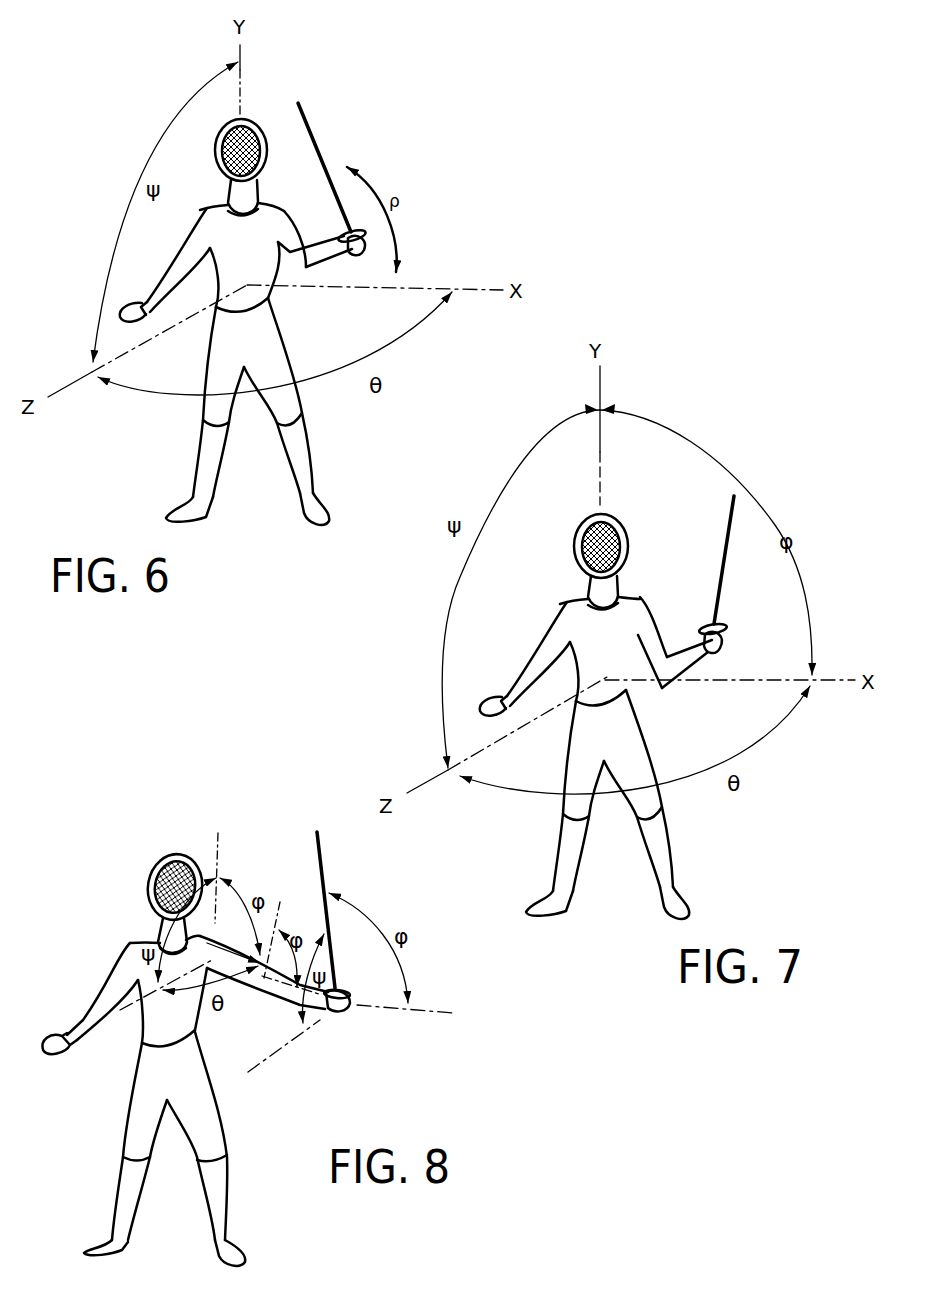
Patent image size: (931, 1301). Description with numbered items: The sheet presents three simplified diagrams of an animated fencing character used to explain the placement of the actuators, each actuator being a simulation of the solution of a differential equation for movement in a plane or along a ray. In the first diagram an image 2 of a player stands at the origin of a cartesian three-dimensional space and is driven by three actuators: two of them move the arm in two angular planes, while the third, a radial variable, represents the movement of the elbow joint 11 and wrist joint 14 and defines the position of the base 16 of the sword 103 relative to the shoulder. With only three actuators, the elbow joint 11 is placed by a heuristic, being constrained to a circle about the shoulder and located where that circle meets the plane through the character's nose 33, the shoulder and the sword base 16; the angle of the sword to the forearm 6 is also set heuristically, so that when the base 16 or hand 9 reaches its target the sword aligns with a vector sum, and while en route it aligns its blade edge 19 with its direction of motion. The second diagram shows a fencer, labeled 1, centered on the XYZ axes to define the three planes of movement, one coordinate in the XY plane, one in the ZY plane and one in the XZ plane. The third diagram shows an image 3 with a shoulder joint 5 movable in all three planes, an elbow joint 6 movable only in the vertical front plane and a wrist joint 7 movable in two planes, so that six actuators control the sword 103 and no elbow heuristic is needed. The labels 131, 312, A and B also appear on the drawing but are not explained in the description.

In FIG. 7, the fencer body 1 is at (641, 727).
In FIG. 6, the image of a player 2 is at (305, 413).
In FIG. 8, the image 3 is at (136, 1065).
In FIG. 8, the shoulder joint 5 is at (208, 944).
In FIG. 8, the elbow joint 6 is at (256, 984).
In FIG. 8, the wrist joint 7 is at (322, 1012).
In FIG. 6, the hand 9 is at (352, 250).
In FIG. 8, the hand 9 is at (346, 1000).
In FIG. 6, the elbow joint 11 is at (310, 288).
In FIG. 6, the wrist joint 14 is at (395, 233).
In FIG. 6, the base of the sword 16 is at (360, 226).
In FIG. 6, the blade edge 19 is at (322, 151).
In FIG. 6, the nose 33 is at (267, 142).
In FIG. 6, the sword 103 is at (321, 146).
In FIG. 8, the sword 103 is at (324, 860).
In FIG. 8, the forearm axis 131 is at (230, 990).
In FIG. 6, the shoulder 312 is at (289, 212).
In FIG. 6, the upper arm segment A is at (303, 241).
In FIG. 6, the torso side B is at (343, 276).